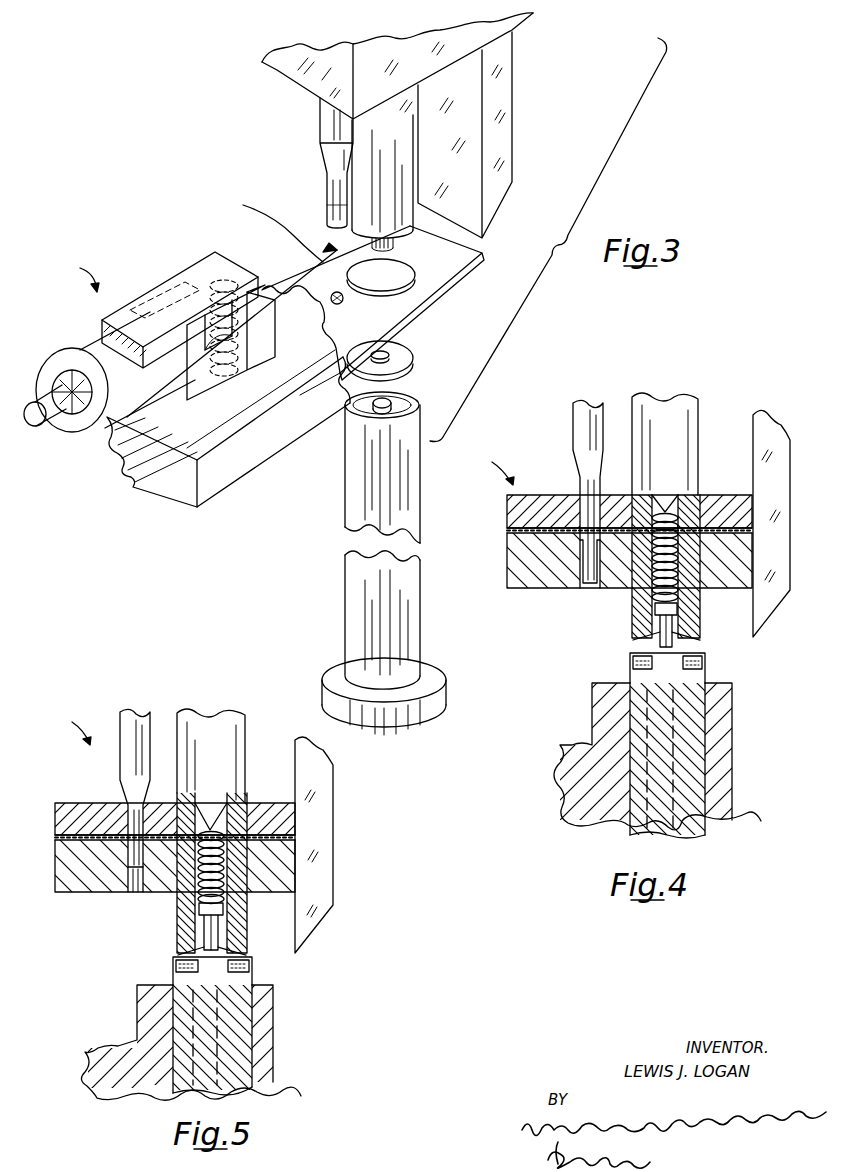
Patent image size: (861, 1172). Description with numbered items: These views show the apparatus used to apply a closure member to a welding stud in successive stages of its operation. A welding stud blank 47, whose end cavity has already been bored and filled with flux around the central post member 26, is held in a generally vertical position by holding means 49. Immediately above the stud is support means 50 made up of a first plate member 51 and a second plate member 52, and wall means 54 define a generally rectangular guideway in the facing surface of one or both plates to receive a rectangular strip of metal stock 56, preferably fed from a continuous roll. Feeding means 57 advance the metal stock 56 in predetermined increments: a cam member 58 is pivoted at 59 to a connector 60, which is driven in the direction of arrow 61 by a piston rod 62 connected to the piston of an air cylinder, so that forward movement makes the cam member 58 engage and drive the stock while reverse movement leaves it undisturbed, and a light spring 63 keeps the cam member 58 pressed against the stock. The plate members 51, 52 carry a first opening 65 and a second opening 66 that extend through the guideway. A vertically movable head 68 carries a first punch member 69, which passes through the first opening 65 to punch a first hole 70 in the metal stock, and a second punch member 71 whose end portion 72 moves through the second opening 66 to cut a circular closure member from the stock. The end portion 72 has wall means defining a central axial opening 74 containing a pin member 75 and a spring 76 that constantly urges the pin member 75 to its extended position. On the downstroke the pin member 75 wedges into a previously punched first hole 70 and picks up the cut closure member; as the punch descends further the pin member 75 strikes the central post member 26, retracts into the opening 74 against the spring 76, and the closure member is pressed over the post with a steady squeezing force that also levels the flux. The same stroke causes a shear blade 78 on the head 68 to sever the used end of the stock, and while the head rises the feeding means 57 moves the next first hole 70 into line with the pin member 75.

In FIG. 4, the central post member 26 is at (670, 672).
In FIG. 5, the central post member 26 is at (210, 976).
In FIG. 3, the welding stud blank 47 is at (345, 585).
In FIG. 4, the welding stud blank 47 is at (667, 760).
In FIG. 5, the welding stud blank 47 is at (212, 1040).
In FIG. 4, the means for holding the stud 49 is at (592, 730).
In FIG. 5, the means for holding the stud 49 is at (137, 1038).
In FIG. 4, the support means 50 is at (492, 466).
In FIG. 5, the support means 50 is at (70, 726).
In FIG. 3, the first plate member 51 is at (400, 312).
In FIG. 4, the first plate member 51 is at (507, 503).
In FIG. 5, the first plate member 51 is at (78, 802).
In FIG. 3, the second plate member 52 is at (235, 478).
In FIG. 4, the second plate member 52 is at (507, 567).
In FIG. 5, the second plate member 52 is at (73, 893).
In FIG. 3, the wall means 54 is at (250, 352).
In FIG. 3, the metal stock 56 is at (238, 262).
In FIG. 4, the metal stock 56 is at (507, 532).
In FIG. 5, the metal stock 56 is at (55, 839).
In FIG. 3, the feeding means 57 is at (73, 271).
In FIG. 3, the cam member 58 is at (229, 405).
In FIG. 3, the pivot 59 is at (140, 443).
In FIG. 3, the connector 60 is at (57, 427).
In FIG. 3, the arrow 61 is at (269, 225).
In FIG. 3, the piston rod 62 is at (46, 378).
In FIG. 3, the light spring 63 is at (300, 395).
In FIG. 4, the first opening 65 is at (587, 583).
In FIG. 5, the first opening 65 is at (133, 893).
In FIG. 4, the second opening 66 is at (632, 575).
In FIG. 5, the second opening 66 is at (177, 890).
In FIG. 3, the vertically movable head 68 is at (277, 62).
In FIG. 3, the first punch member 69 is at (320, 134).
In FIG. 4, the first punch member 69 is at (573, 428).
In FIG. 5, the first punch member 69 is at (122, 712).
In FIG. 3, the first hole 70 is at (333, 298).
In FIG. 3, the second punch member 71 is at (393, 123).
In FIG. 3, the end portion 72 is at (367, 196).
In FIG. 4, the central axial opening 74 is at (676, 580).
In FIG. 5, the central axial opening 74 is at (212, 937).
In FIG. 4, the pin member 75 is at (688, 630).
In FIG. 5, the pin member 75 is at (220, 942).
In FIG. 4, the spring 76 is at (672, 510).
In FIG. 5, the spring 76 is at (210, 832).
In FIG. 3, the shear blade 78 is at (500, 148).
In FIG. 4, the shear blade 78 is at (762, 603).
In FIG. 5, the shear blade 78 is at (323, 880).